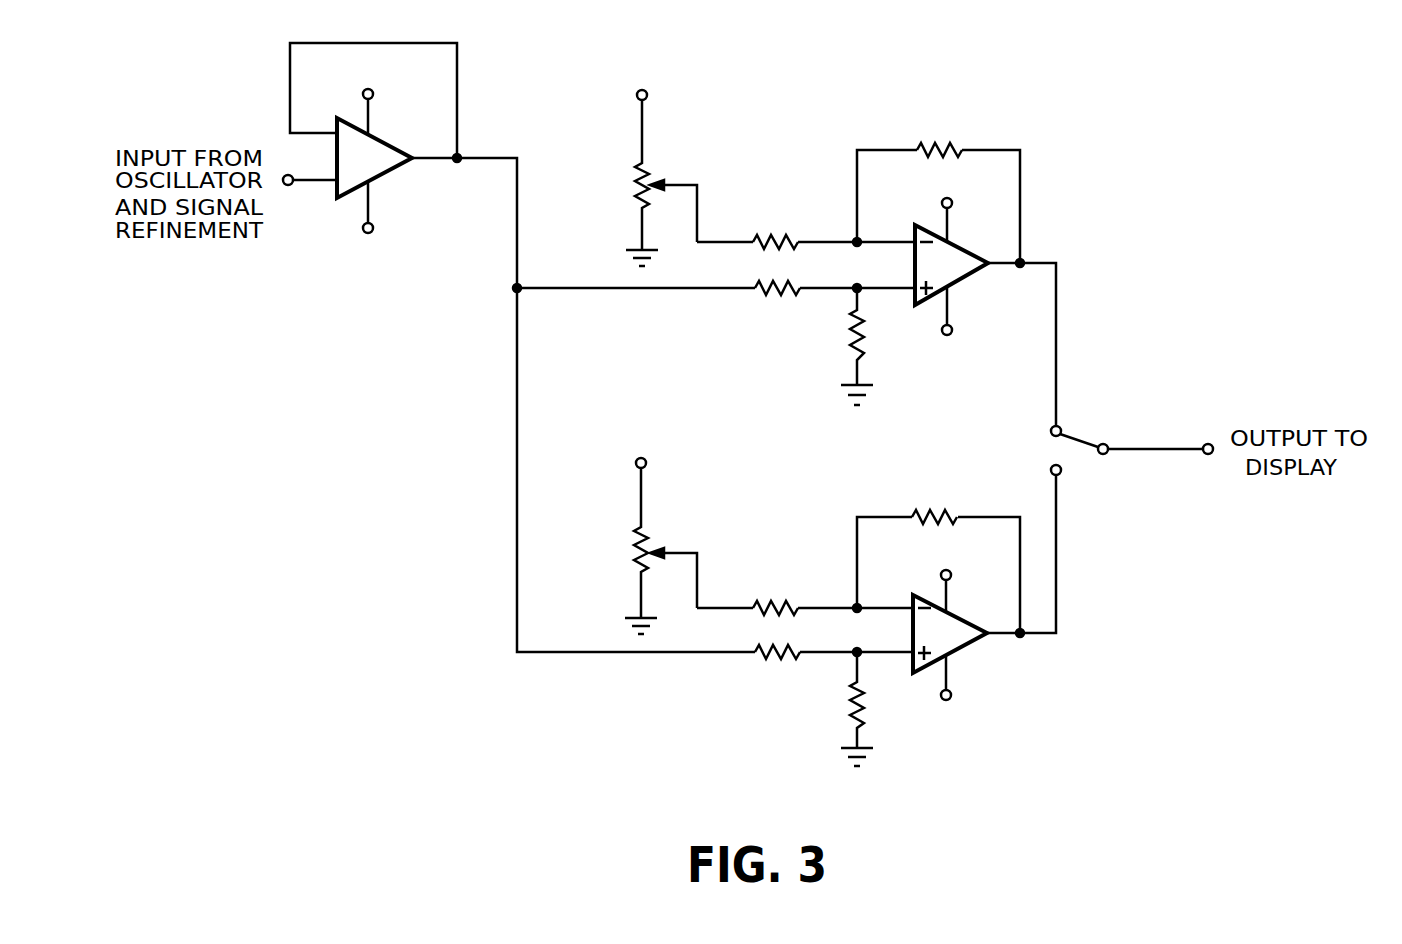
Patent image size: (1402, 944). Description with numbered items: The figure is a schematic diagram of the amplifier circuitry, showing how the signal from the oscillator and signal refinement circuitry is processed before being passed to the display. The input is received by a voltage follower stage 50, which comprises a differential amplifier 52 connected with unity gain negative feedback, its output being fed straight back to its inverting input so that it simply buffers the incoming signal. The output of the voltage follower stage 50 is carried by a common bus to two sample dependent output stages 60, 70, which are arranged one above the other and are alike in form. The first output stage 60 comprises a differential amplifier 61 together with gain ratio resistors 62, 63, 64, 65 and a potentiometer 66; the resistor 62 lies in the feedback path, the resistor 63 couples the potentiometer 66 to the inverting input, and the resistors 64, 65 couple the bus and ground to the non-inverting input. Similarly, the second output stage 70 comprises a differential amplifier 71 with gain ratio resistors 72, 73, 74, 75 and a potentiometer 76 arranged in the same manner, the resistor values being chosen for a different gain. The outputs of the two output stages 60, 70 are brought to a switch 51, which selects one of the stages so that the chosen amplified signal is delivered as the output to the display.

The voltage follower stage 50 is at (342, 368).
The switch 51 is at (1078, 430).
The differential amplifier 52 is at (388, 180).
The output stage 60 is at (1098, 271).
The differential amplifier 61 is at (965, 282).
The gain ratio resistor 62 is at (925, 158).
The gain ratio resistor 63 is at (780, 245).
The gain ratio resistor 64 is at (785, 280).
The gain ratio resistor 65 is at (862, 337).
The potentiometer 66 is at (650, 167).
The output stage 70 is at (1104, 600).
The differential amplifier 71 is at (963, 652).
The gain ratio resistor 72 is at (922, 523).
The gain ratio resistor 73 is at (758, 615).
The gain ratio resistor 74 is at (777, 647).
The gain ratio resistor 75 is at (868, 703).
The potentiometer 76 is at (643, 533).